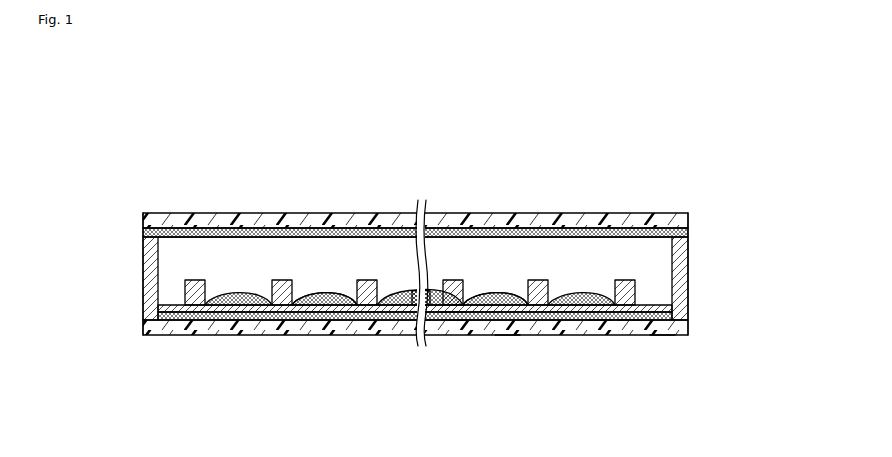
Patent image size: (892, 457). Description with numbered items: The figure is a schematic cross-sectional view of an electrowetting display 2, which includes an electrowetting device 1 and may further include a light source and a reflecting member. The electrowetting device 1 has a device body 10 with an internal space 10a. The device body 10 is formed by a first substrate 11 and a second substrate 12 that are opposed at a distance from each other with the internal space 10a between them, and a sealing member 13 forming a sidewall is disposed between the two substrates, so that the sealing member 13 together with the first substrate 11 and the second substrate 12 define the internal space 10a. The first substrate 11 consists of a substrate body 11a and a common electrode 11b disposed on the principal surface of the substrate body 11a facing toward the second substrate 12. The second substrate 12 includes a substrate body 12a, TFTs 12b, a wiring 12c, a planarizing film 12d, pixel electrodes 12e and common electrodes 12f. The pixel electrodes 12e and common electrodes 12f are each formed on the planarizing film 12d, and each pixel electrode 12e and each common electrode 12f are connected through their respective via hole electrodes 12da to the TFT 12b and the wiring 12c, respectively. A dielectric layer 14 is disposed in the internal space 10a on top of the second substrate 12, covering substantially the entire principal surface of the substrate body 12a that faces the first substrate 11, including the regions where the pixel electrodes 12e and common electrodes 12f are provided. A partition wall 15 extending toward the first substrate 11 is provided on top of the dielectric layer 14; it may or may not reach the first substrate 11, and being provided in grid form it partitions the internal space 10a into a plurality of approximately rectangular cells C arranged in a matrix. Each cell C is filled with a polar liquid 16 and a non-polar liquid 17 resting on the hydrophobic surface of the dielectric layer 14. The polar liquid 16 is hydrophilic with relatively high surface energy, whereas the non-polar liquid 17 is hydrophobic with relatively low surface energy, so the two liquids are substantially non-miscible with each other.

The electrowetting device 1 is at (614, 177).
The electrowetting display 2 is at (683, 131).
The device body 10 is at (590, 212).
The internal space 10a is at (283, 237).
The first substrate 11 is at (785, 200).
The substrate body 11a is at (691, 221).
The common electrode 11b is at (691, 230).
The second substrate 12 is at (690, 328).
The substrate body 12a is at (662, 337).
The TFTs 12b is at (455, 318).
The wiring 12c is at (600, 320).
The planarizing film 12d is at (690, 313).
The via hole electrodes 12da is at (452, 320).
The pixel electrodes 12e is at (507, 333).
The common electrodes 12f is at (628, 322).
The sealing member 13 is at (143, 270).
The dielectric layer 14 is at (690, 305).
The partition wall 15 is at (612, 290).
The polar liquid 16 is at (438, 250).
The non-polar liquid 17 is at (478, 283).
The cells C is at (397, 278).